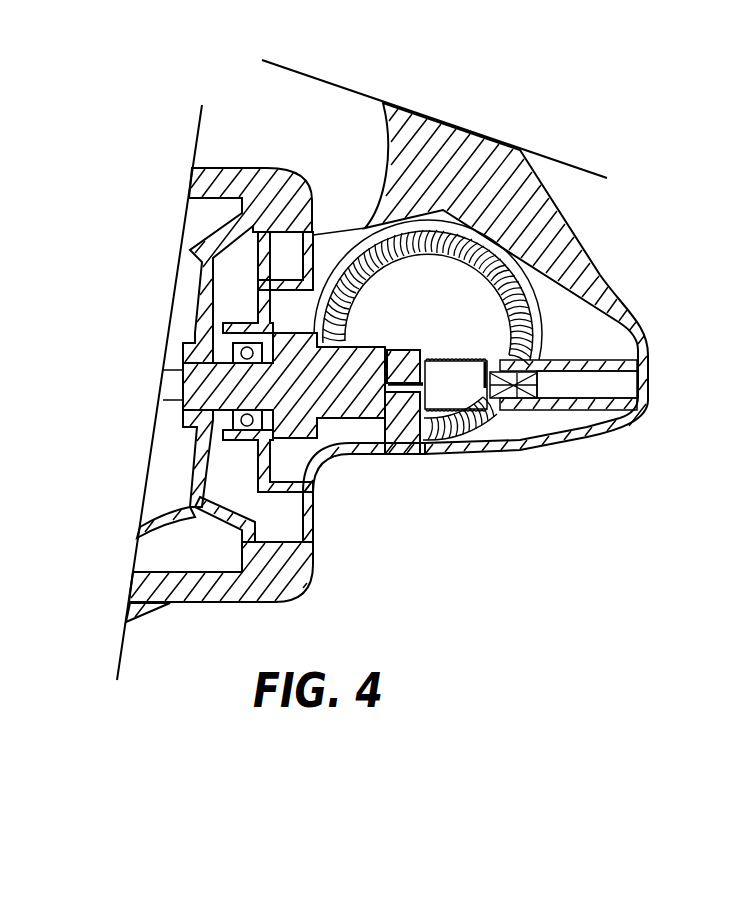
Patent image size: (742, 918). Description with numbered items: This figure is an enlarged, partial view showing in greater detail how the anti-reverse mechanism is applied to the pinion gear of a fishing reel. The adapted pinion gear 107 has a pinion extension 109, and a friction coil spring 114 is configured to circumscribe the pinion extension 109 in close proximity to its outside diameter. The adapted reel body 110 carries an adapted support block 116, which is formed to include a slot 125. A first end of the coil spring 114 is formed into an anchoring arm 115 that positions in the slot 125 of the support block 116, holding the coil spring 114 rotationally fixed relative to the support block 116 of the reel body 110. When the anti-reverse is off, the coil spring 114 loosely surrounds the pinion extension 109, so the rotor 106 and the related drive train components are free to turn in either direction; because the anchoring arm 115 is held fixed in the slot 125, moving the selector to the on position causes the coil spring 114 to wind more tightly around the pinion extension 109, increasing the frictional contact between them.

The rotor 106 is at (178, 253).
The pinion gear 107 is at (347, 408).
The pinion extension 109 is at (456, 402).
The reel body 110 is at (570, 246).
The coil spring 114 is at (450, 360).
The anchoring arm 115 is at (403, 380).
The support block 116 is at (403, 423).
The slot 125 is at (382, 213).